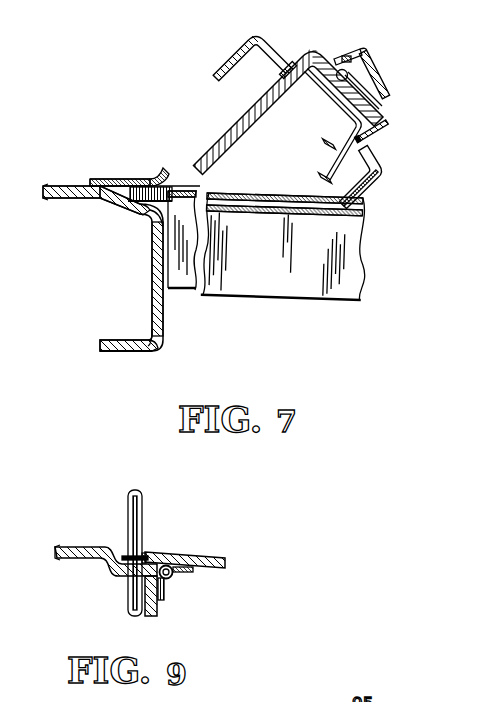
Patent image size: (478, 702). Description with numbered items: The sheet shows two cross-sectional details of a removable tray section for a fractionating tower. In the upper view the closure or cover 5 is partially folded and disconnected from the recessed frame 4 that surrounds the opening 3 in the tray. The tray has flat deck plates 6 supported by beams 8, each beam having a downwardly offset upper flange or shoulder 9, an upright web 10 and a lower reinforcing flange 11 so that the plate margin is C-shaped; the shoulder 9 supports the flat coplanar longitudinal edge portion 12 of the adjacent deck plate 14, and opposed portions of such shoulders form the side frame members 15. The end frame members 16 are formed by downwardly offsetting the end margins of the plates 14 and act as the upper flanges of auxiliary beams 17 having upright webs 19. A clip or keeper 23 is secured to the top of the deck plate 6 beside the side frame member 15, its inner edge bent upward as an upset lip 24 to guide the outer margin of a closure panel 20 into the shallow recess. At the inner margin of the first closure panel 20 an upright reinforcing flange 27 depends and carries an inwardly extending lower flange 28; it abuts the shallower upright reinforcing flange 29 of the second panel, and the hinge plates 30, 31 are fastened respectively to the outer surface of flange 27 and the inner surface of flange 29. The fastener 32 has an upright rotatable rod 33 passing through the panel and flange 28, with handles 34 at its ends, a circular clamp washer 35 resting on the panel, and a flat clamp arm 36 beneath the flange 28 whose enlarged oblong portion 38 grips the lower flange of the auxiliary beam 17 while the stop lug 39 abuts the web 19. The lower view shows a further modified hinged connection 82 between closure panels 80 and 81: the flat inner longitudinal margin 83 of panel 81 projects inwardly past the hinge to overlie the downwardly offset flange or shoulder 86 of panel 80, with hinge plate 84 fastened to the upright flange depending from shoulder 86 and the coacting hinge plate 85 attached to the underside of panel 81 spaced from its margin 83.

In FIG. 7, the opening 3 is at (111, 287).
In FIG. 7, the recessed frame 4 is at (365, 296).
In FIG. 7, the closure or cover 5 is at (302, 110).
In FIG. 7, the deck plate 6 is at (45, 187).
In FIG. 7, the beam 8 is at (100, 352).
In FIG. 7, the upper flange or shoulder 9 is at (146, 219).
In FIG. 7, the web 10 is at (147, 319).
In FIG. 7, the lower reinforcing flange 11 is at (118, 352).
In FIG. 7, the longitudinal edge portion 12 is at (153, 188).
In FIG. 7, the deck plate 14 is at (262, 195).
In FIG. 7, the side frame member 15 is at (133, 221).
In FIG. 7, the end frame member 16 is at (286, 212).
In FIG. 7, the auxiliary beam 17 is at (265, 297).
In FIG. 7, the web 19 is at (357, 261).
In FIG. 7, the closure panel 20 is at (216, 147).
In FIG. 7, the clip or keeper 23 is at (97, 178).
In FIG. 7, the upset lip 24 is at (165, 171).
In FIG. 7, the upright reinforcing flange 27 is at (328, 86).
In FIG. 7, the lower flange 28 is at (363, 139).
In FIG. 7, the upright reinforcing flange 29 is at (340, 68).
In FIG. 7, the hinge plate 30 is at (355, 88).
In FIG. 7, the hinge plate 31 is at (343, 57).
In FIG. 7, the fastener 32 is at (257, 41).
In FIG. 9, the fastener 32 is at (143, 498).
In FIG. 7, the rod 33 is at (378, 168).
In FIG. 9, the rod 33 is at (128, 522).
In FIG. 7, the handle 34 is at (221, 63).
In FIG. 7, the clamp washer 35 is at (289, 62).
In FIG. 7, the clamp arm 36 is at (388, 124).
In FIG. 7, the oblong portion 38 is at (321, 177).
In FIG. 7, the stop lug 39 is at (326, 143).
In FIG. 9, the closure panel 80 is at (70, 548).
In FIG. 9, the closure panel 81 is at (225, 552).
In FIG. 9, the hinged connection 82 is at (170, 578).
In FIG. 9, the inner longitudinal margin 83 is at (146, 553).
In FIG. 9, the hinge plate 84 is at (160, 600).
In FIG. 9, the hinge plate 85 is at (190, 572).
In FIG. 9, the downwardly offset flange or shoulder 86 is at (123, 575).